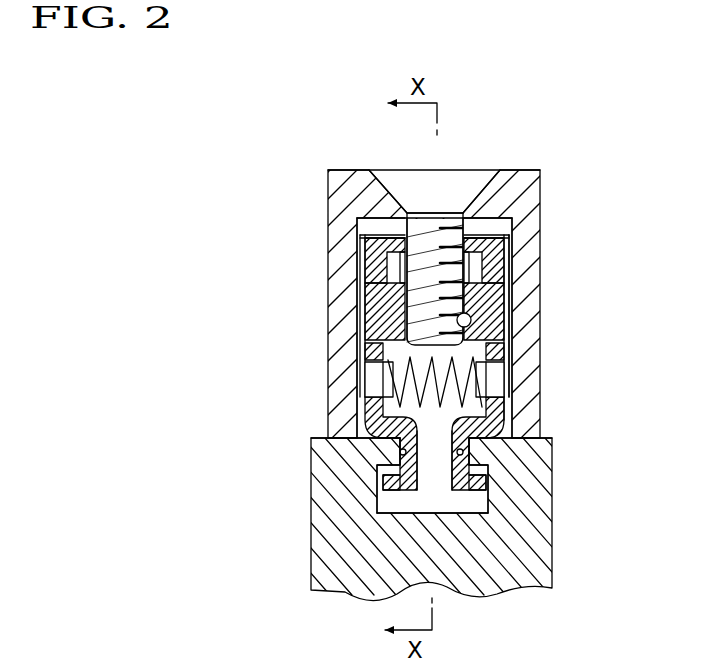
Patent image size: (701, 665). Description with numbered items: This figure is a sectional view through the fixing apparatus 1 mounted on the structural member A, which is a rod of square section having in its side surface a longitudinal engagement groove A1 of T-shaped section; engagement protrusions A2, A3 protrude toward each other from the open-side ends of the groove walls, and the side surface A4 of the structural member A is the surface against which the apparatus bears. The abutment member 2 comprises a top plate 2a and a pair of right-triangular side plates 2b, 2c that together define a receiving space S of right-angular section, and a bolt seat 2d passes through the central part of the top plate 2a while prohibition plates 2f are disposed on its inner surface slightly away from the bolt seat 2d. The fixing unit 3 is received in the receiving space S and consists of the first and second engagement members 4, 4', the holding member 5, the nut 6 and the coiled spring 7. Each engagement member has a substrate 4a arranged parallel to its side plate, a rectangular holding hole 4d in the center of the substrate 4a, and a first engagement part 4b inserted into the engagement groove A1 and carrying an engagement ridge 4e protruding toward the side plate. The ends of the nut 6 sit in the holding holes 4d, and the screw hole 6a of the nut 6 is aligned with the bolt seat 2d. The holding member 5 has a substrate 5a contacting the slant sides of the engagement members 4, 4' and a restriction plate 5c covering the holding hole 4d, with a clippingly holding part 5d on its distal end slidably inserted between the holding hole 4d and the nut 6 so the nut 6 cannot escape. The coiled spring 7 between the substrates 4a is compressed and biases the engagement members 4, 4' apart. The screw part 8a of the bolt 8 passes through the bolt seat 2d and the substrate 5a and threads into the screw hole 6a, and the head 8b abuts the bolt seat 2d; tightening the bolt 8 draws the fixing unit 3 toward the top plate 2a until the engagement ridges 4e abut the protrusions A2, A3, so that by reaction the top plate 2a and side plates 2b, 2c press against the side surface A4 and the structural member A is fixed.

The fixing apparatus 1 is at (381, 352).
The abutment member 2 is at (381, 254).
The top plate 2a is at (352, 170).
The side plate 2b is at (352, 298).
The side plate 2c is at (522, 330).
The bolt seat 2d is at (477, 195).
The prohibition plate 2f is at (400, 226).
The fixing unit 3 is at (512, 250).
The first engagement member 4 is at (398, 431).
The second engagement member 4' is at (554, 392).
The substrate 4a is at (372, 257).
The first engagement part 4b is at (422, 482).
The holding hole 4d is at (360, 272).
The engagement ridge 4e is at (385, 482).
The holding member 5 is at (398, 318).
The substrate 5a is at (372, 222).
The restriction plate 5c is at (507, 353).
The clippingly holding part 5d is at (365, 356).
The nut 6 is at (398, 362).
The screw hole 6a is at (470, 316).
The coiled spring 7 is at (470, 400).
The bolt 8 is at (368, 213).
The screw part 8a is at (417, 263).
The head 8b is at (412, 187).
The receiving space S is at (400, 228).
The structural member A is at (426, 506).
The engagement groove A1 is at (470, 507).
The engagement protrusion A2 is at (378, 468).
The engagement protrusion A3 is at (485, 468).
The one side surface A4 is at (322, 438).